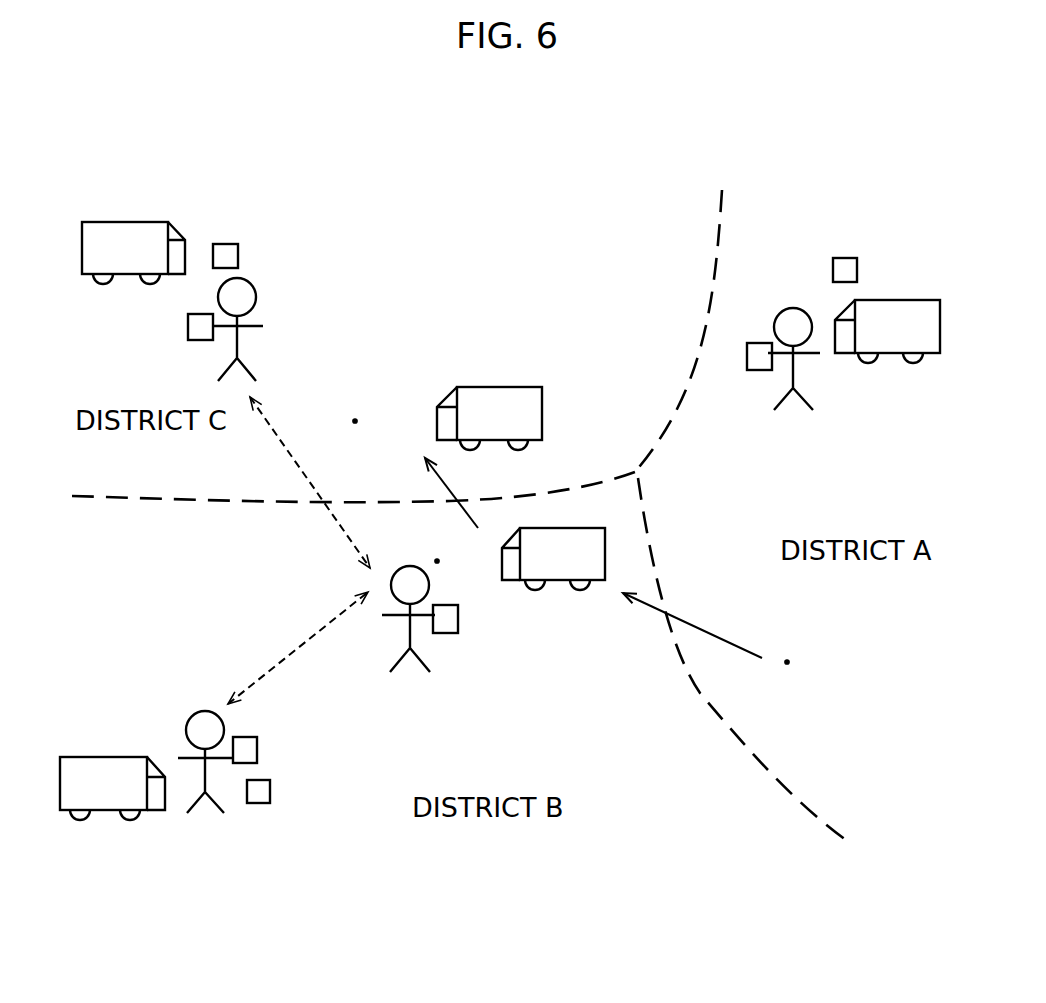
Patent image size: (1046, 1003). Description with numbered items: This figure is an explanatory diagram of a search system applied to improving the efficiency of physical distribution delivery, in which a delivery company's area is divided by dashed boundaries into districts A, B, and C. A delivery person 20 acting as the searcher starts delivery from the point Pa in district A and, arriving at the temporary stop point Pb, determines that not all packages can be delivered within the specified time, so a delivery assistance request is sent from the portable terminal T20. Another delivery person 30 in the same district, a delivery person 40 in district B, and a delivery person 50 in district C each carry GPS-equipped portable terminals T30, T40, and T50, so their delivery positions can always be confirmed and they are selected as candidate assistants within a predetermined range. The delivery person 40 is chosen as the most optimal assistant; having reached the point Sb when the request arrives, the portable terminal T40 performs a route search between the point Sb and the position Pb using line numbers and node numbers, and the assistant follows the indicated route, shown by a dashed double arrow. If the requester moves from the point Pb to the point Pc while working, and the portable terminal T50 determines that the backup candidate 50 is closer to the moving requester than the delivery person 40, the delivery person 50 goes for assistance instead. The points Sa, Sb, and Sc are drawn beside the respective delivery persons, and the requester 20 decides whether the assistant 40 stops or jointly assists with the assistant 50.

The delivery person 20 is at (410, 670).
The delivery person 30 is at (813, 365).
The delivery person 40 is at (185, 740).
The delivery person 50 is at (262, 314).
The portable terminal T20 is at (460, 620).
The portable terminal T30 is at (753, 372).
The portable terminal T40 is at (258, 748).
The portable terminal T50 is at (186, 328).
The point Sa is at (866, 272).
The point Sb is at (279, 792).
The point Sc is at (245, 257).
The point Pa is at (803, 664).
The temporary stop point Pb is at (454, 564).
The point Pc is at (371, 422).